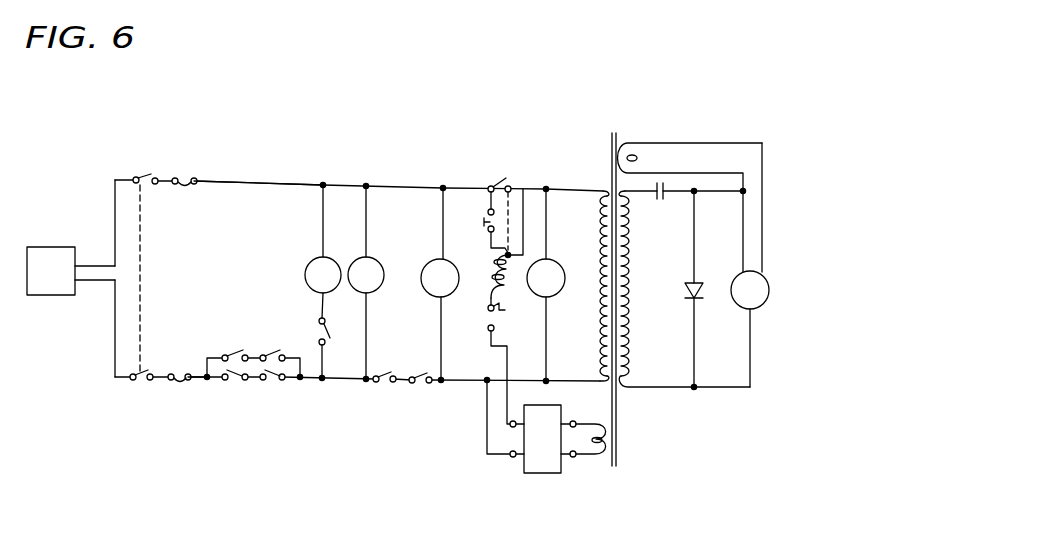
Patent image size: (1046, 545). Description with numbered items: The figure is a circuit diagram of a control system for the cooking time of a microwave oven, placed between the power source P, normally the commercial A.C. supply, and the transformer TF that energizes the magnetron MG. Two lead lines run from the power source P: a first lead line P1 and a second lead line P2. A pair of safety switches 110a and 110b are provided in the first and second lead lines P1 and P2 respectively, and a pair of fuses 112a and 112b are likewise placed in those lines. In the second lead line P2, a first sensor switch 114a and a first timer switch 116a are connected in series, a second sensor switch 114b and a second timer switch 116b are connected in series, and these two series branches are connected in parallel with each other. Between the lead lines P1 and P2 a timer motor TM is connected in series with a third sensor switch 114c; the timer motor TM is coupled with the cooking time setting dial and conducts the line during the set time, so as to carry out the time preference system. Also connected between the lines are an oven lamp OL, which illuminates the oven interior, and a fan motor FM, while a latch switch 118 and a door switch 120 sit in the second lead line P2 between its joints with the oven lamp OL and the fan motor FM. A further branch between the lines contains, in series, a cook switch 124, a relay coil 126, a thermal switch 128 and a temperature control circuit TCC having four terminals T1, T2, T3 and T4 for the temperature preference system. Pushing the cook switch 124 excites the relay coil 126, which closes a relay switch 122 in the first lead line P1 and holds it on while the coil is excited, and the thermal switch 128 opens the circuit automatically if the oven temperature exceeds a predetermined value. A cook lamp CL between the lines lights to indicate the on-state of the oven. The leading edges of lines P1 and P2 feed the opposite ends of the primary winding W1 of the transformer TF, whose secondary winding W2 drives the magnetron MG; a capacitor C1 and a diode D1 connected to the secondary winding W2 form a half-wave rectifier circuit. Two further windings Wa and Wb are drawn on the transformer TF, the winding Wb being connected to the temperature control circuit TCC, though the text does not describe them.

The safety switch 110a is at (150, 177).
The safety switch 110b is at (138, 380).
The fuse 112a is at (185, 178).
The fuse 112b is at (182, 372).
The first sensor switch 114a is at (228, 355).
The second sensor switch 114b is at (228, 372).
The third sensor switch 114c is at (329, 333).
The first timer switch 116a is at (270, 355).
The second timer switch 116b is at (272, 372).
The latch switch 118 is at (383, 383).
The door switch 120 is at (419, 383).
The relay switch 122 is at (507, 183).
The cook switch 124 is at (487, 212).
The relay coil 126 is at (495, 262).
The thermal switch 128 is at (486, 312).
The power source P is at (71, 271).
The first lead line P1 is at (268, 182).
The second lead line P2 is at (192, 381).
The timer motor TM is at (323, 250).
The oven lamp OL is at (366, 282).
The fan motor FM is at (440, 283).
The cook lamp CL is at (546, 284).
The temperature control circuit TCC is at (522, 425).
The terminal T1 is at (511, 426).
The terminal T2 is at (513, 457).
The terminal T3 is at (580, 388).
The terminal T4 is at (573, 458).
The transformer TF is at (611, 145).
The primary winding W1 is at (598, 245).
The secondary winding W2 is at (631, 285).
The auxiliary winding Wa is at (648, 143).
The auxiliary winding Wb is at (597, 455).
The capacitor C1 is at (659, 199).
The diode D1 is at (687, 289).
The magnetron MG is at (750, 287).